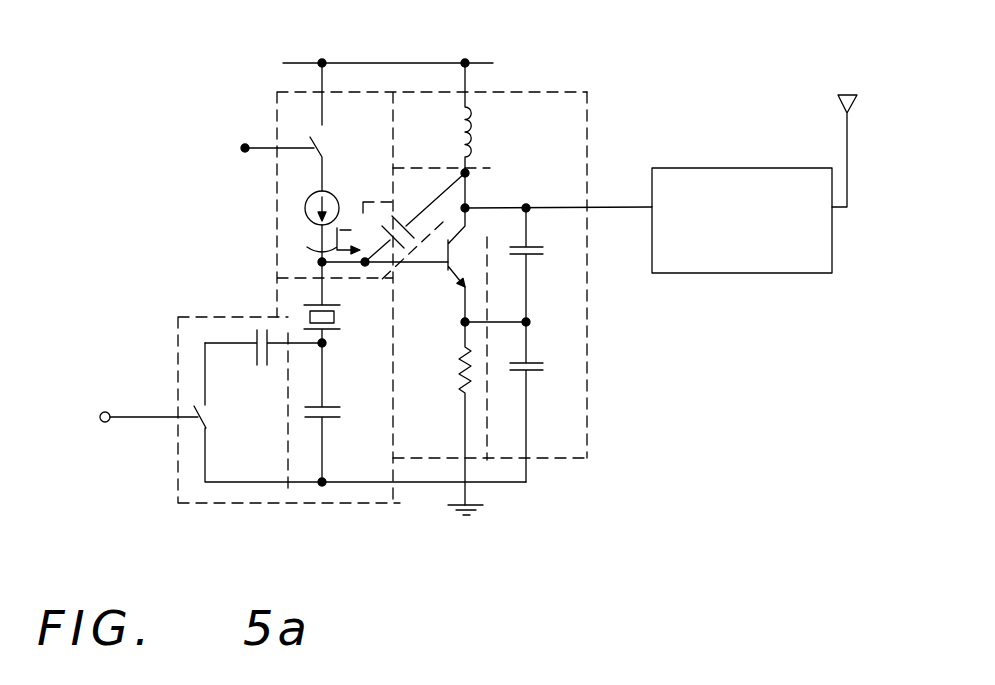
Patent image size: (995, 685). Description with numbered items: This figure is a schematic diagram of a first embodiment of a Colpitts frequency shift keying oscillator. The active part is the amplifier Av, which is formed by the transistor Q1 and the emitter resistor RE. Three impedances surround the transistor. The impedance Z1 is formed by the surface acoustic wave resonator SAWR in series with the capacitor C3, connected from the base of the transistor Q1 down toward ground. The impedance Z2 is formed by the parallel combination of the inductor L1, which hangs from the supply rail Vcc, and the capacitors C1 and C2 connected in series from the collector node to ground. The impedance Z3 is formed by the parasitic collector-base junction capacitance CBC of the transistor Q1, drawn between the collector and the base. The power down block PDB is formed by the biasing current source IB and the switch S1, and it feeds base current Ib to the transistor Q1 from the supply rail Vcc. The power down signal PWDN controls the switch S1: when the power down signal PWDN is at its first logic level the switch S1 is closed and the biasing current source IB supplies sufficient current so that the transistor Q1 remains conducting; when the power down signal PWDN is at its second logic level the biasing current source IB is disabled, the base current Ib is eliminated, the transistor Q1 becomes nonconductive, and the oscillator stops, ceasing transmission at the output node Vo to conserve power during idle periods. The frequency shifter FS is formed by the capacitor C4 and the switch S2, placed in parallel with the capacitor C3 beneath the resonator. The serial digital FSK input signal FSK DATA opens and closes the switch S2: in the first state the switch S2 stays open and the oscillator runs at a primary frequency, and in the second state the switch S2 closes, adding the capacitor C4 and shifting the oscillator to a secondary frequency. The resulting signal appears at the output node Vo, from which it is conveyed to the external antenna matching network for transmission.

The impedance Z1 is at (277, 293).
The impedance Z2 is at (543, 87).
The impedance Z3 is at (487, 237).
The frequency shifter FS is at (178, 478).
The supply voltage Vcc is at (388, 47).
The switch S1 is at (337, 127).
The power down signal PWDN is at (237, 148).
The power down block PDB is at (277, 182).
The biasing current source IB is at (295, 179).
The base current Ib is at (325, 248).
The surface acoustic wave resonator SAWR is at (345, 302).
The capacitor C4 is at (263, 367).
The capacitor C3 is at (339, 412).
The switch S2 is at (360, 412).
The FSK input signal FSK DATA is at (118, 391).
The inductor L1 is at (448, 135).
The collector-base junction capacitance CBC is at (420, 193).
The transistor Q1 is at (469, 263).
The resistor RE is at (451, 418).
The capacitor C1 is at (544, 265).
The capacitor C2 is at (544, 402).
The amplifier Av is at (421, 462).
The output node Vo is at (620, 207).